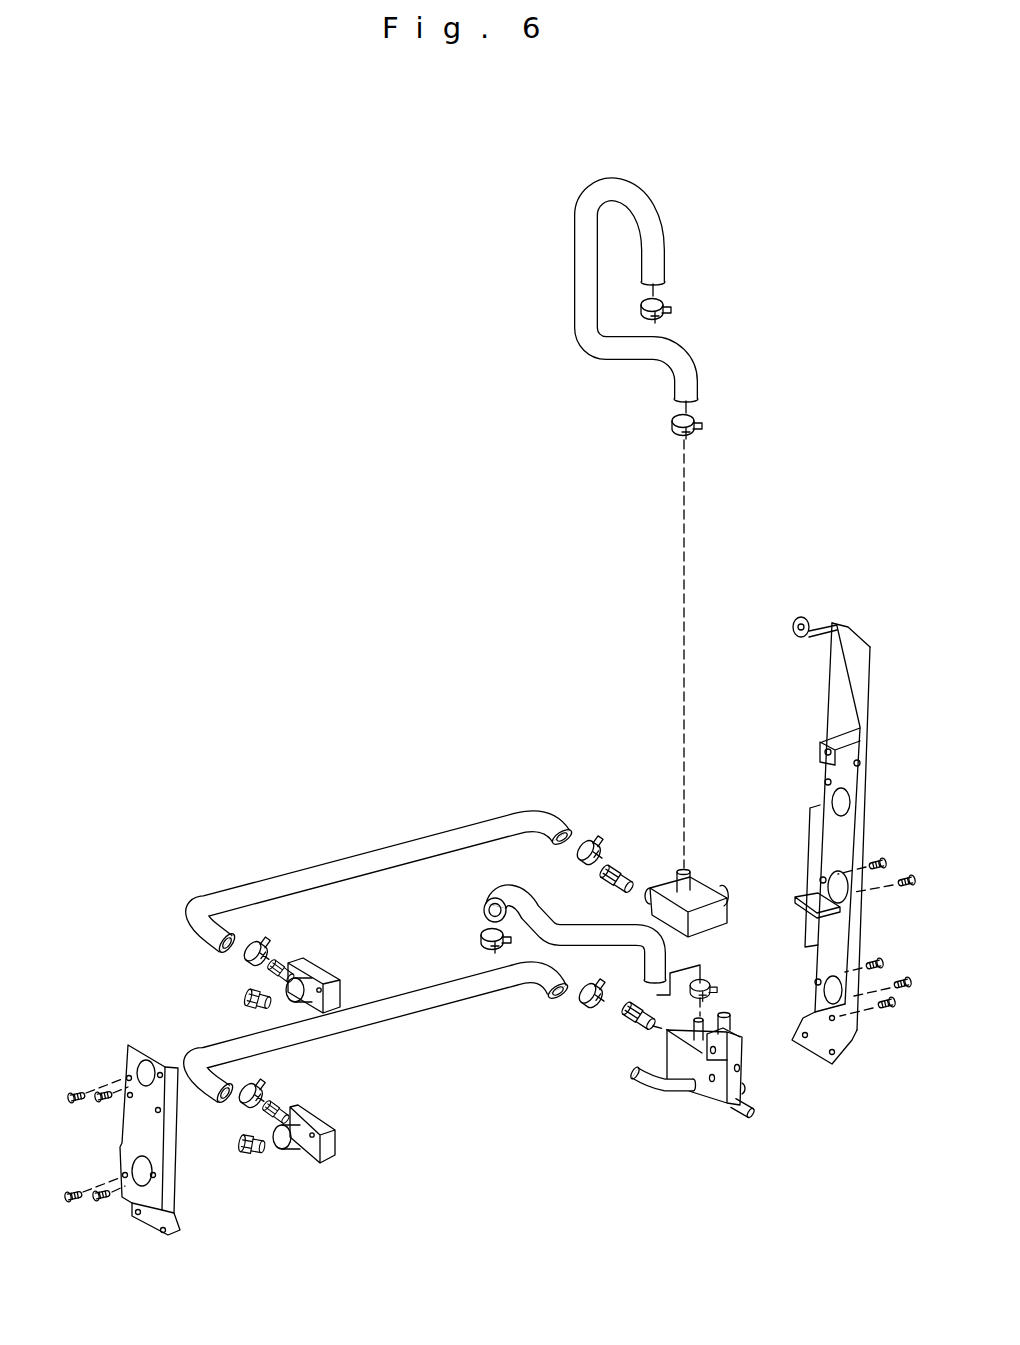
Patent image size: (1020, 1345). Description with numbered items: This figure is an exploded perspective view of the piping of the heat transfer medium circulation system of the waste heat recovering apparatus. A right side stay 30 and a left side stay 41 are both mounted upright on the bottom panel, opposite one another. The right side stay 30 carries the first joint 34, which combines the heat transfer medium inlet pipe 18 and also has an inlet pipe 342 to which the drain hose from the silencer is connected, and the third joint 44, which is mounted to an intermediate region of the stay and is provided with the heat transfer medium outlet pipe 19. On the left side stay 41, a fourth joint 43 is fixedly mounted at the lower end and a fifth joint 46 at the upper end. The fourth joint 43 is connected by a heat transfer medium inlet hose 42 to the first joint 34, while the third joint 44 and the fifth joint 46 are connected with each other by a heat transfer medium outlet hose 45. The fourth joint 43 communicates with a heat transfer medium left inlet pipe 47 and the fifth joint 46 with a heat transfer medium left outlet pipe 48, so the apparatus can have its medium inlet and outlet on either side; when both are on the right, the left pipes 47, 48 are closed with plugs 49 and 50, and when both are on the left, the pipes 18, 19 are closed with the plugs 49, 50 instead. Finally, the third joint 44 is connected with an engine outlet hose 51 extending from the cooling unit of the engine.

The engine outlet hose 51 is at (697, 374).
The right side stay 30 is at (835, 683).
The heat transfer medium outlet pipe 19 is at (712, 900).
The third joint 44 is at (703, 920).
The heat transfer medium inlet pipe 18 is at (706, 1080).
The first joint 34 is at (722, 1103).
The inlet pipe 342 is at (663, 1088).
The heat transfer medium outlet hose 45 is at (385, 855).
The fifth joint 46 is at (313, 970).
The heat transfer medium left outlet pipe 48 is at (283, 978).
The plug 50 is at (247, 1000).
The heat transfer medium inlet hose 42 is at (467, 993).
The left side stay 41 is at (167, 1193).
The plug 49 is at (238, 1148).
The heat transfer medium left inlet pipe 47 is at (282, 1150).
The fourth joint 43 is at (323, 1157).